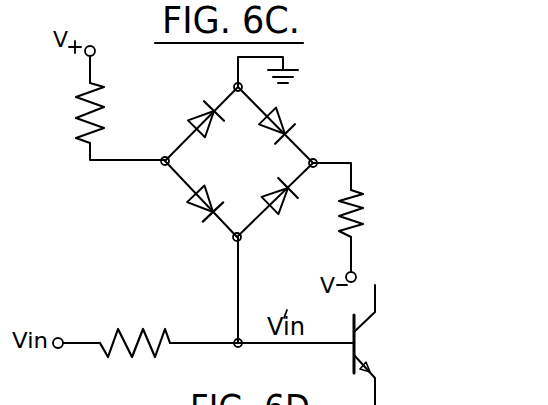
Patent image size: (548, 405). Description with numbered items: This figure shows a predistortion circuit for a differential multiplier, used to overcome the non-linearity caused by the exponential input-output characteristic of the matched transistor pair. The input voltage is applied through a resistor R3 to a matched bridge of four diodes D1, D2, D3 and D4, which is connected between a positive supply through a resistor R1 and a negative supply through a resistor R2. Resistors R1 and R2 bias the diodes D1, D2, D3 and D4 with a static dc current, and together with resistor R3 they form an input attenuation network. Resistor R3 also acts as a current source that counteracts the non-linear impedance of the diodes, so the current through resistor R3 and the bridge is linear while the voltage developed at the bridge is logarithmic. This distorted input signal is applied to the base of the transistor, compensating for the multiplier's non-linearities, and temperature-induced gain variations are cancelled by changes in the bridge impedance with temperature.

The diode D1 is at (198, 113).
The diode D2 is at (288, 120).
The diode D3 is at (283, 207).
The diode D4 is at (202, 210).
The resistor R1 is at (68, 113).
The resistor R2 is at (365, 213).
The resistor R3 is at (135, 328).